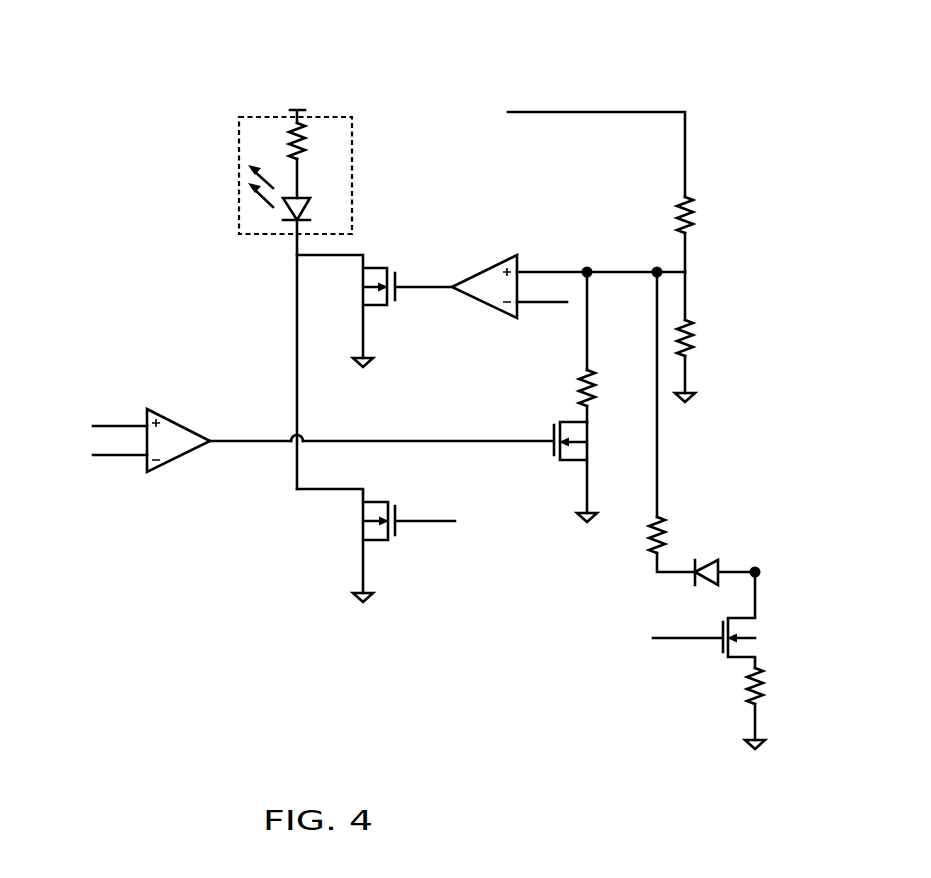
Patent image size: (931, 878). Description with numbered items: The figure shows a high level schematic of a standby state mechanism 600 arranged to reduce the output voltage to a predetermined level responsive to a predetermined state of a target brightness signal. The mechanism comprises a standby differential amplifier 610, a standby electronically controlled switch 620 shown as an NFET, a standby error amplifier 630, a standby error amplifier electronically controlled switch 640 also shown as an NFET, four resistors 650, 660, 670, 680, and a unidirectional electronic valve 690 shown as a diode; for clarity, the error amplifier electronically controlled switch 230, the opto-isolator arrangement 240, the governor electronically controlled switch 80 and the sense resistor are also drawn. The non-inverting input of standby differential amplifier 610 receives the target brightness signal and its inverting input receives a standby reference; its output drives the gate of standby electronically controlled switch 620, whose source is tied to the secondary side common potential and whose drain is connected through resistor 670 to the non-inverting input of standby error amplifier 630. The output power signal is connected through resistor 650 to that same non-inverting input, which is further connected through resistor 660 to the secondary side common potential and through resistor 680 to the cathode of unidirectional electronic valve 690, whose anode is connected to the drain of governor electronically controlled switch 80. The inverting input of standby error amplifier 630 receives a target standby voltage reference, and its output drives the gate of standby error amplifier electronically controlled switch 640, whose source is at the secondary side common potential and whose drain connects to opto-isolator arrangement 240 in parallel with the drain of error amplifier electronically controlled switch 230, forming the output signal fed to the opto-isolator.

The standby state mechanism 600 is at (145, 65).
The opto-isolator arrangement 240 is at (353, 165).
The standby error amplifier electronically controlled switch 640 is at (374, 267).
The standby error amplifier 630 is at (472, 272).
The resistor 650 is at (697, 205).
The resistor 660 is at (700, 340).
The resistor 670 is at (578, 389).
The standby electronically controlled switch 620 is at (578, 430).
The standby differential amplifier 610 is at (177, 417).
The error amplifier electronically controlled switch 230 is at (397, 537).
The resistor 680 is at (650, 542).
The unidirectional electronic valve 690 is at (702, 560).
The governor electronically controlled switch 80 is at (747, 627).